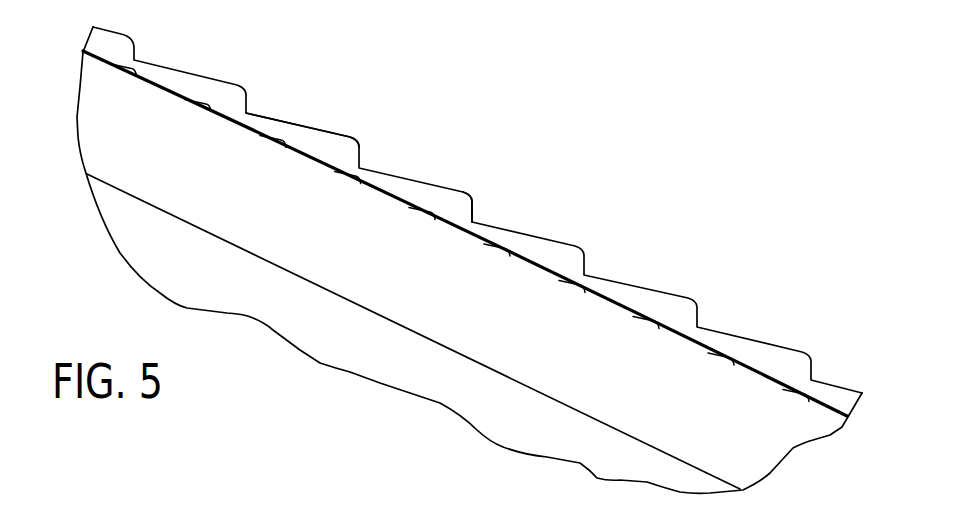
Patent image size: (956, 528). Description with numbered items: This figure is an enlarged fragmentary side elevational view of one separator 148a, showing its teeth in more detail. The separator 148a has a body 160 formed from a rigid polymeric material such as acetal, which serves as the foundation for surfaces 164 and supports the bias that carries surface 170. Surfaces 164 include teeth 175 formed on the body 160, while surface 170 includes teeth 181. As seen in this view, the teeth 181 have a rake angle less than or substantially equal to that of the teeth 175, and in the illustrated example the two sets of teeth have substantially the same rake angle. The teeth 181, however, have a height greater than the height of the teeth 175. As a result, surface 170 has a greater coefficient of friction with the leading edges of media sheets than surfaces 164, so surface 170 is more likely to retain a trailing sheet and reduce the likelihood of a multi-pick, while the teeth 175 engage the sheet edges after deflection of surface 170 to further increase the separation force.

The separator 148a is at (443, 107).
The body 160 is at (597, 327).
The surfaces 164 is at (418, 205).
The surface 170 is at (475, 195).
The teeth 175 is at (363, 170).
The teeth 181 is at (355, 140).